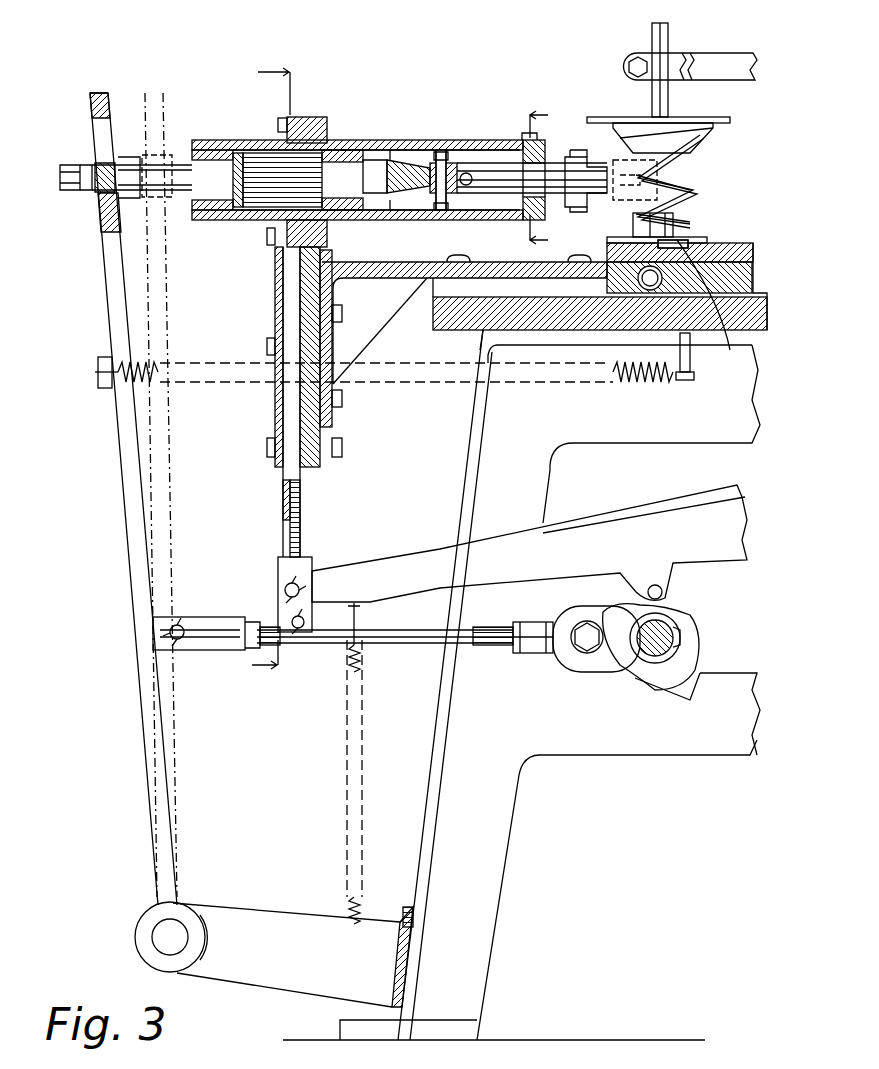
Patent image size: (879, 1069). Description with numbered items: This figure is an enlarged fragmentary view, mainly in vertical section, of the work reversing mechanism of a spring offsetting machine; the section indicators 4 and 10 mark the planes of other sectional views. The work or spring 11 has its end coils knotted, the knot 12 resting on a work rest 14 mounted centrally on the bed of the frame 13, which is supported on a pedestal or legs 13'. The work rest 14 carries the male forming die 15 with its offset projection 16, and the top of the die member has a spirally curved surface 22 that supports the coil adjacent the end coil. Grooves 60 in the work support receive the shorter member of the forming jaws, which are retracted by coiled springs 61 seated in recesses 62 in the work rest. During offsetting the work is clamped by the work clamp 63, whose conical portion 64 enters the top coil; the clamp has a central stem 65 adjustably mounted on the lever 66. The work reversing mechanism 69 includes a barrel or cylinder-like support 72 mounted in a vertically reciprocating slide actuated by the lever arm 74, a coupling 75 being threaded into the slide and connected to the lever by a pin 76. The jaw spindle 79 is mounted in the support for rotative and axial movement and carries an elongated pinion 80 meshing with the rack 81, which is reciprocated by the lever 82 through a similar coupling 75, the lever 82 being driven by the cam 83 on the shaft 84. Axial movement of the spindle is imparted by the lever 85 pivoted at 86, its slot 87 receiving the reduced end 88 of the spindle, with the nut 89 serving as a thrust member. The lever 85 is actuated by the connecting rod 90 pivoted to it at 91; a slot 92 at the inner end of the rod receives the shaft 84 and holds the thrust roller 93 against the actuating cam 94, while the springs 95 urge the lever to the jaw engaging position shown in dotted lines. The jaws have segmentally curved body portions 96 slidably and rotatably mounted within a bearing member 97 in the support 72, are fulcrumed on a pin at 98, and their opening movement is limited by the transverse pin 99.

The section line 4- 4 is at (260, 369).
The section line 10- 10 is at (553, 178).
The spring 11 is at (680, 158).
The knot 12 is at (712, 130).
The frame 13 is at (544, 389).
The pedestal or legs 13' is at (445, 685).
The work rest 14 is at (737, 250).
The male forming die 15 is at (673, 229).
The offset projection 16 is at (677, 222).
The spirally curved surface 22 is at (625, 212).
The grooves 60 is at (712, 310).
The coiled springs 61 is at (635, 281).
The recesses 62 is at (620, 265).
The work clamp 63 is at (603, 117).
The conical portion 64 is at (692, 148).
The central stem 65 is at (670, 33).
The lever 66 is at (733, 65).
The work reversing mechanism 69 is at (453, 140).
The barrel or cylinder-like support 72 is at (492, 150).
The lever arm 74 is at (582, 535).
The coupling 75 is at (300, 565).
The pin 76 is at (310, 588).
The jaw spindle 79 is at (373, 170).
The elongated pinion 80 is at (255, 195).
The rack 81 is at (290, 272).
The lever 82 is at (406, 612).
The cam 83 is at (690, 673).
The shaft 84 is at (663, 632).
The lever 85 is at (85, 280).
The pivot 86 is at (175, 927).
The slot 87 is at (100, 133).
The reduced end 88 is at (108, 182).
The nut 89 is at (72, 185).
The connecting rod 90 is at (333, 647).
The pivot 91 is at (180, 642).
The slot 92 is at (680, 637).
The thrust roller 93 is at (585, 653).
The actuating cam 94 is at (632, 673).
The springs 95 is at (643, 383).
The segmentally curved body portions 96 is at (507, 183).
The bearing member 97 is at (547, 150).
The fulcrum pin 98 is at (467, 183).
The pin 99 is at (437, 207).